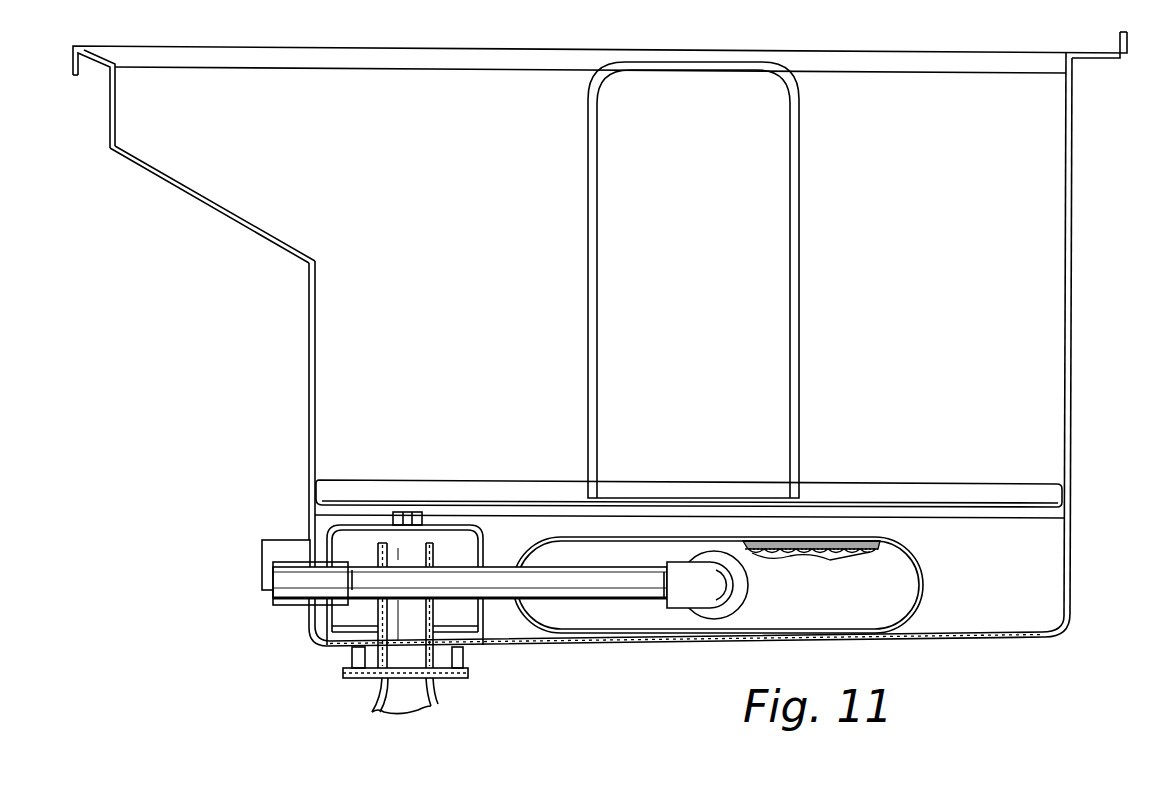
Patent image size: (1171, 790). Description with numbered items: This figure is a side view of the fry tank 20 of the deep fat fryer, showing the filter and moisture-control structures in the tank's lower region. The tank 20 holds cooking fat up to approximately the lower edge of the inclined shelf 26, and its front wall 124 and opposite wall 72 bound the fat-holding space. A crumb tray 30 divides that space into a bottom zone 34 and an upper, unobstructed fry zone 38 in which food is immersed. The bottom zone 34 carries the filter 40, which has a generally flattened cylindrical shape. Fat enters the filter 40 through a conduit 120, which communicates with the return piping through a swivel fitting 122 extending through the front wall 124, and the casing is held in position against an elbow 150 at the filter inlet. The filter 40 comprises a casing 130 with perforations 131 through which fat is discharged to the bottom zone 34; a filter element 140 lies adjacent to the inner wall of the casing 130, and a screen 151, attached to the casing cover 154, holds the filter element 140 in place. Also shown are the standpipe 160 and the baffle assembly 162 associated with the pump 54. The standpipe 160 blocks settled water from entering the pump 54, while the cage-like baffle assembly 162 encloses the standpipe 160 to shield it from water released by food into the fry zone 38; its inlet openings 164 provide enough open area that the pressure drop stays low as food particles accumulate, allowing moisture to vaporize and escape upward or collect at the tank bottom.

The fry tank 20 is at (298, 274).
The inclined shelf 26 is at (210, 206).
The front wall 124 is at (310, 351).
The end wall 72 is at (1073, 200).
The bottom zone 34 is at (1035, 549).
The crumb tray 30 is at (920, 483).
The fry zone 38 is at (933, 383).
The casing cover 154 is at (923, 607).
The filter element 140 is at (882, 542).
The filter 40 is at (940, 577).
The casing 130 is at (767, 540).
The perforations 131 is at (785, 540).
The screen 151 is at (847, 551).
The baffle assembly 162 is at (489, 534).
The inlet openings 164 is at (328, 552).
The conduit 120 is at (498, 599).
The pump 54 is at (437, 688).
The swivel fitting 122 is at (293, 599).
The standpipe 160 is at (432, 560).
The elbow 150 is at (687, 600).